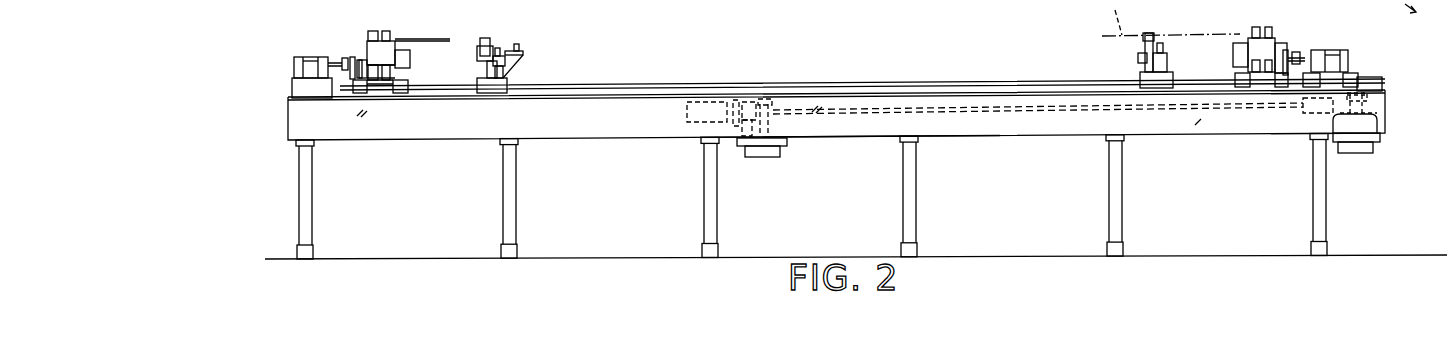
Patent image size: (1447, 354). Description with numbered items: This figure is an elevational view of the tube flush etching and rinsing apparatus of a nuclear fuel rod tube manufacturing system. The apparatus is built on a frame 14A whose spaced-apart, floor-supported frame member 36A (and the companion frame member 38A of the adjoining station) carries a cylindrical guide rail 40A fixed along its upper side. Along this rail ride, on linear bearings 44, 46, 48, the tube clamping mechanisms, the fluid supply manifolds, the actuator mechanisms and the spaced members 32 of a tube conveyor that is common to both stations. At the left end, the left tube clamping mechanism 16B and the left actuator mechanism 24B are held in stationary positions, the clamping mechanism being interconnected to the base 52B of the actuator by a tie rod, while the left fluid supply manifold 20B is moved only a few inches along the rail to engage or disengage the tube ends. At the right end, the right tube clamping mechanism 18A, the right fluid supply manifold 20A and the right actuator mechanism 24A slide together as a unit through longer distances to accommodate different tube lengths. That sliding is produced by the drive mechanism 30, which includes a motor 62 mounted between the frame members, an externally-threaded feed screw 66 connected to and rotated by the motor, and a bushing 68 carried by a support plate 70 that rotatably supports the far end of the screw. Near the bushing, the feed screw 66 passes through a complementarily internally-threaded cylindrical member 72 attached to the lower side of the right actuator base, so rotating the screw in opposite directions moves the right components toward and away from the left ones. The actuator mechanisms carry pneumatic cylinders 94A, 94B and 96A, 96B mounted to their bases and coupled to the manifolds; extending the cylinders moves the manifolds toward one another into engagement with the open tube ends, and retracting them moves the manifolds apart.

The frame 14A is at (580, 143).
The left tube clamping mechanism 16B is at (477, 43).
The right tube clamping mechanism 18A is at (1138, 55).
The right fluid supply manifold 20A is at (1277, 38).
The left fluid supply manifold 20B is at (372, 50).
The right actuator mechanism 24A is at (1350, 53).
The left actuator mechanism 24B is at (311, 56).
The drive mechanism 30 is at (762, 157).
The spaced members of tube conveyor 32 is at (500, 46).
The frame member 36A is at (858, 132).
The frame member 38A is at (1248, 40).
The cylindrical guide rail 40A is at (977, 81).
The linear bearing 44 is at (490, 92).
The linear bearing 46 is at (397, 93).
The linear bearing 48 is at (1352, 80).
The base of left actuator mechanism 52B is at (300, 90).
The motor 62 is at (698, 120).
The feed screw 66 is at (1000, 116).
The bushing 68 is at (1340, 103).
The support plate 70 is at (1370, 148).
The internally-threaded cylindrical member 72 is at (1307, 117).
The pneumatic cylinder 94A is at (1333, 55).
The pneumatic cylinder 94B is at (293, 64).
The pneumatic cylinder 96A is at (1302, 52).
The pneumatic cylinder 96B is at (400, 38).